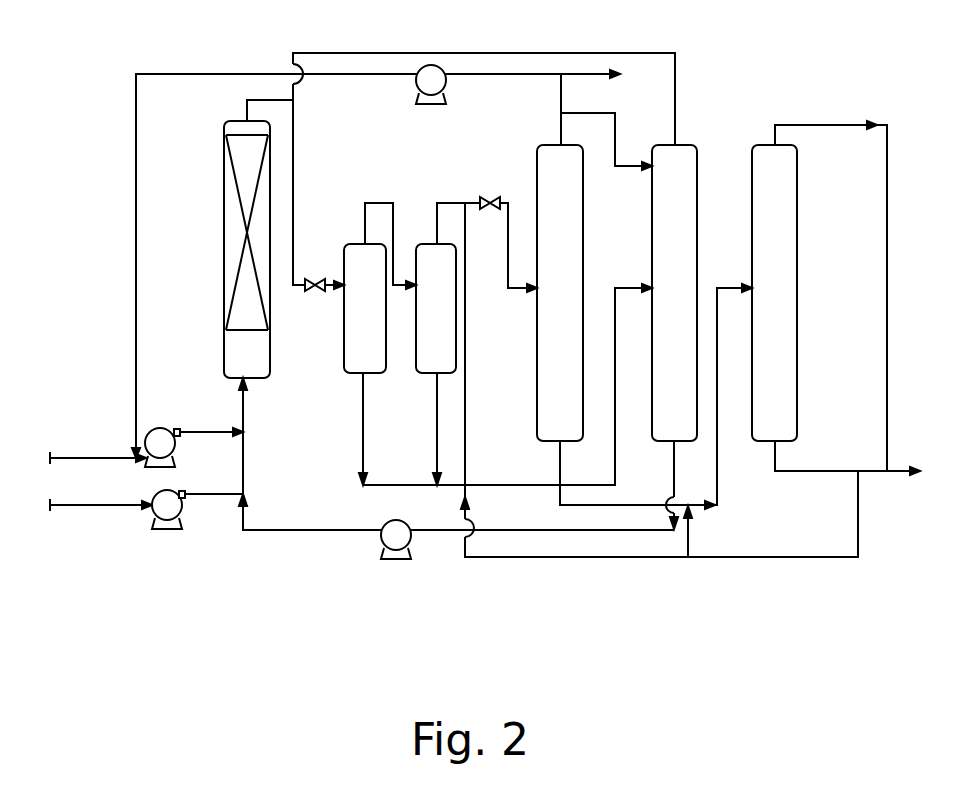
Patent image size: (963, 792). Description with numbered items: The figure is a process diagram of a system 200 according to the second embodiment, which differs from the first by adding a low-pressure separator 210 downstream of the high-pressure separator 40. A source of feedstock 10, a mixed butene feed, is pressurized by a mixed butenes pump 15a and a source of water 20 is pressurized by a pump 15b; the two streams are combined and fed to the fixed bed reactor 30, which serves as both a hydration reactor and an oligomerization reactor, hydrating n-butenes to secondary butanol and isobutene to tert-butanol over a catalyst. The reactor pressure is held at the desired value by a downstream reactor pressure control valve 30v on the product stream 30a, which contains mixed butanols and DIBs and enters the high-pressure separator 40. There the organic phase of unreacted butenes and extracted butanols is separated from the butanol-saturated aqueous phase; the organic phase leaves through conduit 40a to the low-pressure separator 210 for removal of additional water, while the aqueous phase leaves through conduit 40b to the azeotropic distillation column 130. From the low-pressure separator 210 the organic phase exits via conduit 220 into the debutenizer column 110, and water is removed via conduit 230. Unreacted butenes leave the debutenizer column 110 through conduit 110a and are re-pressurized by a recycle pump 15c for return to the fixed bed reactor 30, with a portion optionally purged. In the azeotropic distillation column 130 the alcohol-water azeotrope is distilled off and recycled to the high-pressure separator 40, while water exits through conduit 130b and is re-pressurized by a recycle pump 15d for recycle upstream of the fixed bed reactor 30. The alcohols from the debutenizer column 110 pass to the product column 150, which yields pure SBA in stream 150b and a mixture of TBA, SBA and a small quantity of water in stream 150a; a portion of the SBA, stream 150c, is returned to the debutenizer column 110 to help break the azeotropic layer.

The system 200 is at (57, 76).
The feedstock 10 is at (98, 446).
The water 20 is at (101, 520).
The mixed butenes pump 15a is at (194, 432).
The pump 15b is at (196, 528).
The recycle pump 15c is at (376, 261).
The recycle pump 15d is at (456, 488).
The fixed bed reactor 30 is at (260, 364).
The product stream 30a is at (484, 171).
The reactor pressure control valve 30v is at (316, 300).
The high-pressure separator 40 is at (378, 364).
The conduit 40a is at (389, 231).
The conduit 40b is at (505, 384).
The low-pressure separator 210 is at (454, 364).
The conduit 220 is at (487, 230).
The conduit 230 is at (418, 429).
The debutenizer column 110 is at (578, 364).
The conduit 110a is at (579, 122).
The azeotropic distillation column 130 is at (689, 364).
The conduit 130b is at (650, 485).
The product column 150 is at (793, 364).
The stream 150a is at (831, 281).
The SBA stream 150b is at (847, 474).
The SBA stream portion 150c is at (659, 380).